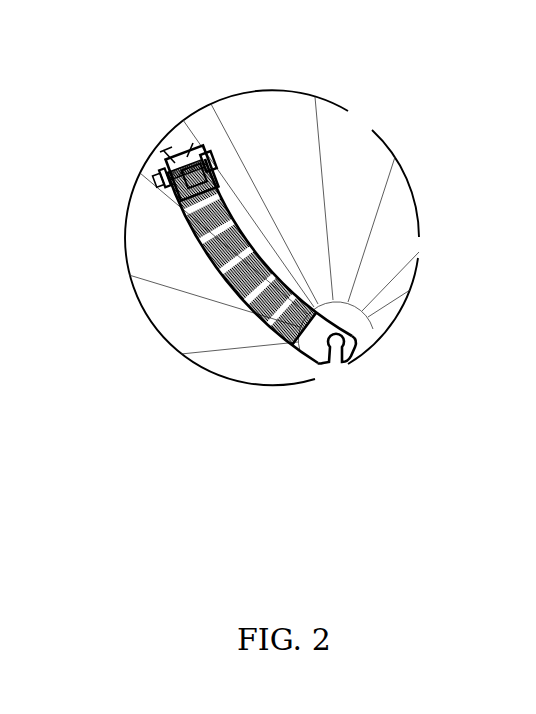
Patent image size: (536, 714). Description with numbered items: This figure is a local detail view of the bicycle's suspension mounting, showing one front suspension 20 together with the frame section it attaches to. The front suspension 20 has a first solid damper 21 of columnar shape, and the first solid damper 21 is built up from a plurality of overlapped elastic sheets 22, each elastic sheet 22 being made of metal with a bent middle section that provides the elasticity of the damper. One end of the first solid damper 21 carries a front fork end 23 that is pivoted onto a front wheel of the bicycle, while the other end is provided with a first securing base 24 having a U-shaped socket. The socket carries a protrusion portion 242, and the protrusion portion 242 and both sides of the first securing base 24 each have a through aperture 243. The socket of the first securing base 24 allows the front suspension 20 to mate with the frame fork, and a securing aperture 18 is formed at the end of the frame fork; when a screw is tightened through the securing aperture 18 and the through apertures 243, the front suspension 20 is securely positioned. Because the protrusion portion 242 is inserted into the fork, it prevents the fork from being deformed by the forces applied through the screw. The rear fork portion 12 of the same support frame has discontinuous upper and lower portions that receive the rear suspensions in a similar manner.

The rear fork portion 12 is at (173, 133).
The securing aperture 18 is at (205, 133).
The front suspension 20 is at (305, 281).
The first solid damper 21 is at (250, 308).
The elastic sheet 22 is at (218, 272).
The front fork end 23 is at (352, 334).
The first securing base 24 is at (168, 197).
The protrusion portion 242 is at (168, 156).
The through aperture 243 is at (176, 153).